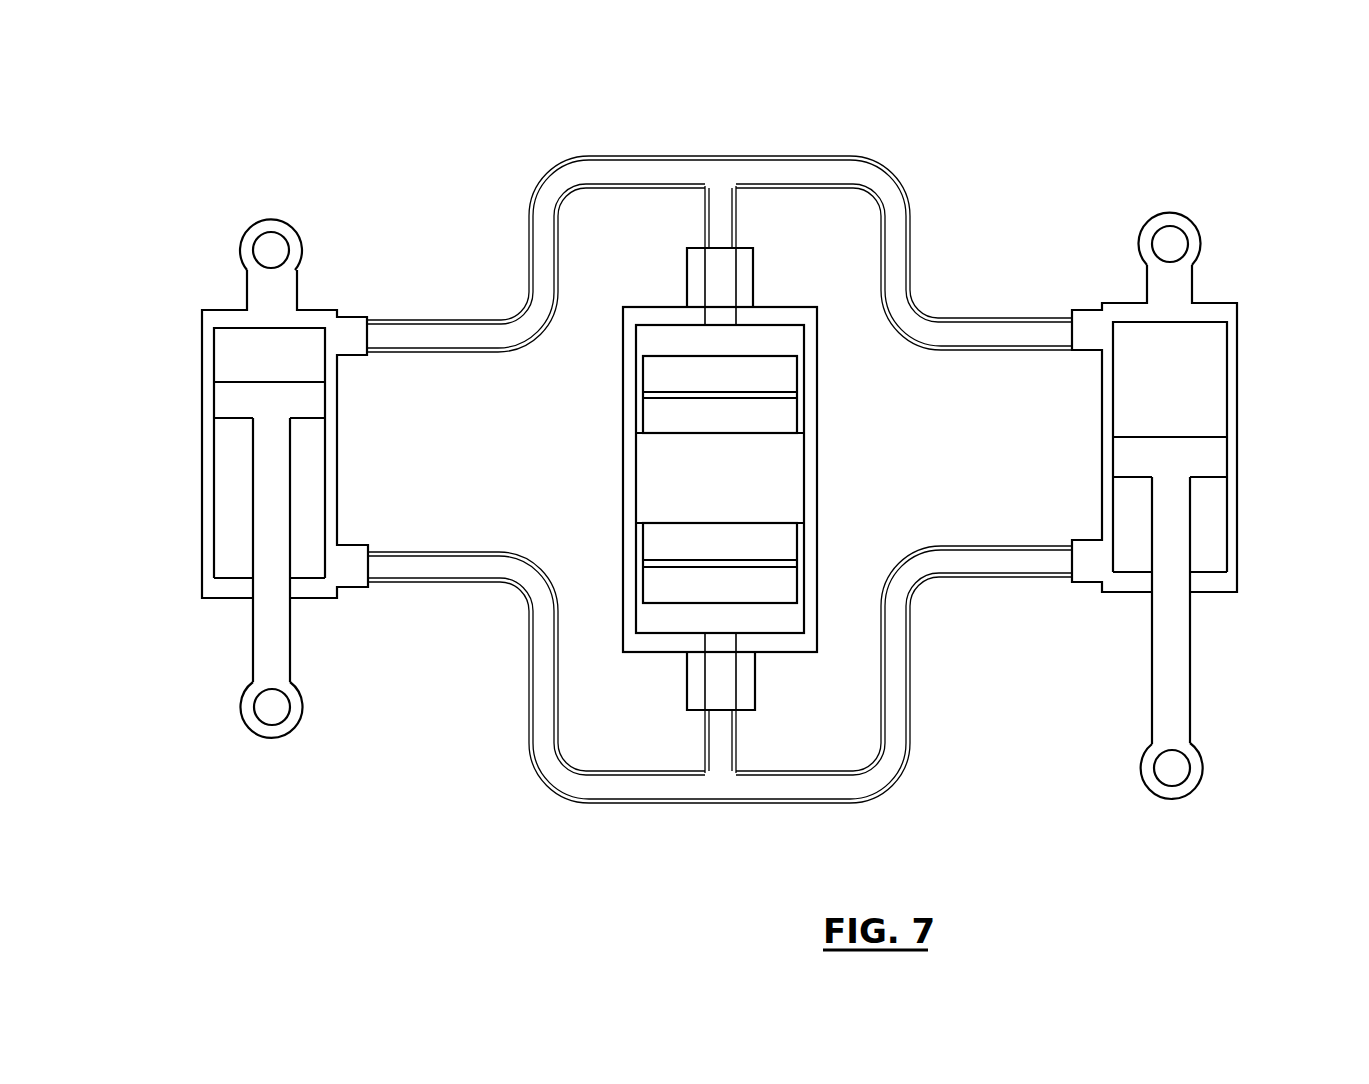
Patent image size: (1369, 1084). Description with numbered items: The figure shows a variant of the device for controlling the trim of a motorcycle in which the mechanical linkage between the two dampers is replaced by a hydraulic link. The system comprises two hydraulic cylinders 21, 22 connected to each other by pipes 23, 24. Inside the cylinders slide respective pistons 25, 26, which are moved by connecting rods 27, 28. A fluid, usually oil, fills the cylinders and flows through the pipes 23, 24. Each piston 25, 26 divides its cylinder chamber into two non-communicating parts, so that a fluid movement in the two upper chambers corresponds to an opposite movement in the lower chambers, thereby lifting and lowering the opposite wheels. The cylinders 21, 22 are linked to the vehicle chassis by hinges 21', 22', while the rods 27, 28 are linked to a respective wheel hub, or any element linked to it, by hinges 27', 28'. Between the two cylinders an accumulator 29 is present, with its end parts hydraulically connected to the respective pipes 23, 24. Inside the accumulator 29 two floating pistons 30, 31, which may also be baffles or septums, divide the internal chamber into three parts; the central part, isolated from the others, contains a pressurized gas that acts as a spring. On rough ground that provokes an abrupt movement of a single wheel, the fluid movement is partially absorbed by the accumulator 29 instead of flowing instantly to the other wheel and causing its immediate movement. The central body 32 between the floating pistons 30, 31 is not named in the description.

The hydraulic cylinder 21 is at (236, 434).
The hinge 21' is at (258, 163).
The hydraulic cylinder 22 is at (1202, 428).
The hinge 22' is at (1147, 158).
The pipe 23 is at (545, 215).
The pipe 24 is at (548, 700).
The piston 25 is at (235, 403).
The piston 26 is at (1162, 452).
The connecting rod 27 is at (197, 550).
The hinge 27' is at (204, 755).
The connecting rod 28 is at (1242, 610).
The hinge 28' is at (1241, 796).
The accumulator 29 is at (747, 313).
The floating piston 30 is at (675, 390).
The floating piston 31 is at (775, 555).
The central piston body 32 is at (677, 470).